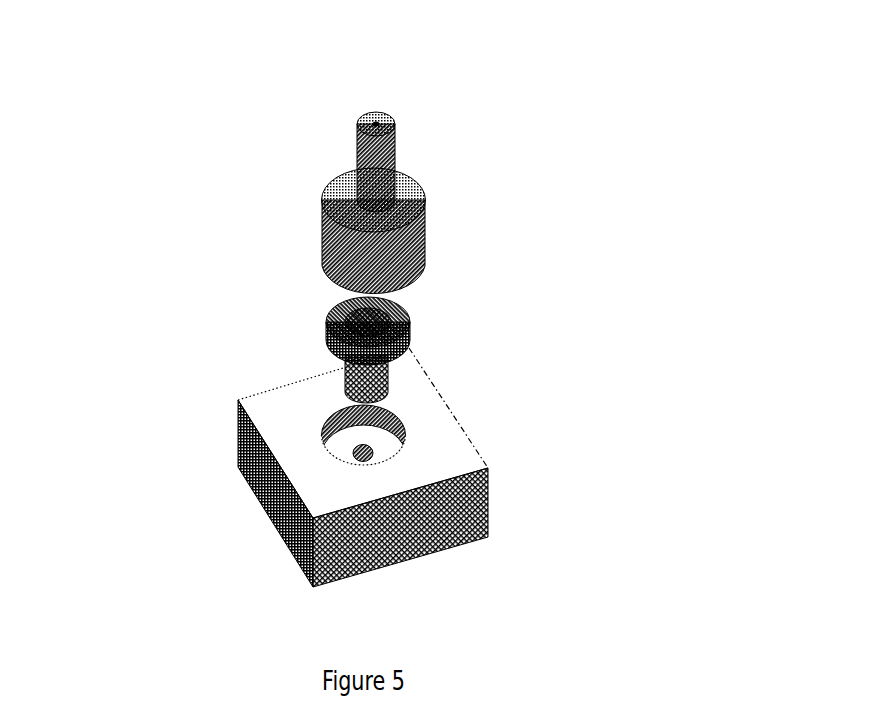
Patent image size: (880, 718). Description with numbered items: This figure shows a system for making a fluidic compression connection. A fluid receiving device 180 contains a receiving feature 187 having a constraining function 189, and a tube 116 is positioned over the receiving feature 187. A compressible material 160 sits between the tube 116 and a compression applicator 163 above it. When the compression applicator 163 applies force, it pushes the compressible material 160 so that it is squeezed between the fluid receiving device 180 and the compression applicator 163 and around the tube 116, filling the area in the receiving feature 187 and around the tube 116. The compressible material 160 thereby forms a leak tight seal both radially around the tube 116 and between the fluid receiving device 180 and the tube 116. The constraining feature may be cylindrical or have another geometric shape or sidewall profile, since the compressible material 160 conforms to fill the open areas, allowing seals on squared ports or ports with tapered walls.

The tube 116 is at (390, 147).
The compression applicator 163 is at (417, 233).
The compressible material 160 is at (410, 333).
The fluid receiving device 180 is at (447, 443).
The constraining function 189 is at (348, 417).
The receiving feature 187 is at (338, 450).